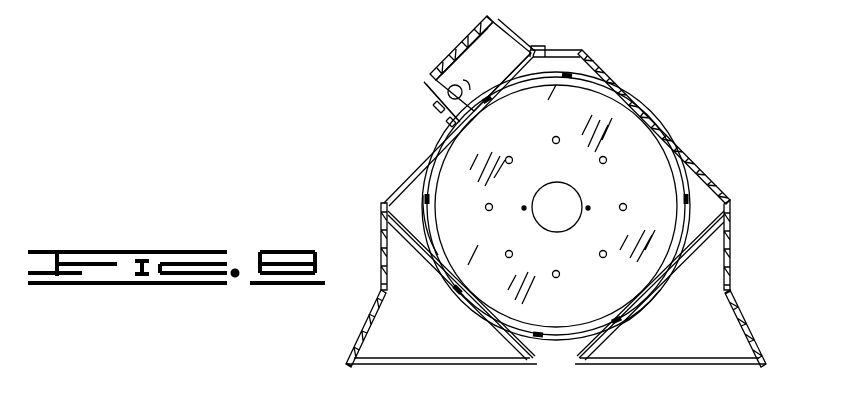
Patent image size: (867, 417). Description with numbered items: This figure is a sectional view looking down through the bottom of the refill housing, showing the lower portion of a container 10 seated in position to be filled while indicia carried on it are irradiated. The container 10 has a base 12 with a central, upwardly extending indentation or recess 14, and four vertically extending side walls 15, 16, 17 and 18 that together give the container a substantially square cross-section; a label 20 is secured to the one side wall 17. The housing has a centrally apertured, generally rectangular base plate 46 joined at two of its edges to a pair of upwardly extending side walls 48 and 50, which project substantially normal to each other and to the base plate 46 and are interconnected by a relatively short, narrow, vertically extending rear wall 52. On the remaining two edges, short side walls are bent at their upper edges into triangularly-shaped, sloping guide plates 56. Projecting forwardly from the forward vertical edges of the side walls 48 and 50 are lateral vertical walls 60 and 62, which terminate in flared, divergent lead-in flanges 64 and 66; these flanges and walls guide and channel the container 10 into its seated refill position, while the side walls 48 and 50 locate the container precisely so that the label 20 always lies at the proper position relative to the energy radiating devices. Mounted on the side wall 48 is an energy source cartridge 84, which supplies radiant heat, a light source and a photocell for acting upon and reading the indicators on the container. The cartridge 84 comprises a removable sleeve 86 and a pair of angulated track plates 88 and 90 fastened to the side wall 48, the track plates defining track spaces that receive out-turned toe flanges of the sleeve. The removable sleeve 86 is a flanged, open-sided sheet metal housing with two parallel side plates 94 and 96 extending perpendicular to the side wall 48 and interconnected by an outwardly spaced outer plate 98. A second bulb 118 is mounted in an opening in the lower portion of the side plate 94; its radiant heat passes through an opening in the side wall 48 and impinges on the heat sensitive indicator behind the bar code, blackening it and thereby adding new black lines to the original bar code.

The container 10 is at (412, 203).
The base 12 is at (650, 198).
The indentation or recess 14 is at (570, 214).
The side wall 15 is at (630, 300).
The side wall 16 is at (675, 157).
The side wall 17 is at (480, 123).
The side wall 18 is at (435, 245).
The label 20 is at (438, 153).
The base plate 46 is at (590, 66).
The side wall 48 is at (405, 195).
The side wall 50 is at (650, 125).
The rear wall 52 is at (548, 48).
The guide plate 56 is at (450, 337).
The lateral vertical wall 60 is at (385, 234).
The lateral vertical wall 62 is at (729, 220).
The lead-in flange 64 is at (370, 320).
The lead-in flange 66 is at (750, 323).
The energy source cartridge 84 is at (522, 38).
The removable sleeve 86 is at (470, 37).
The track plate 88 is at (447, 125).
The track plate 90 is at (552, 48).
The side plate 94 is at (430, 83).
The side plate 96 is at (510, 32).
The outer plate 98 is at (465, 50).
The second bulb 118 is at (489, 68).